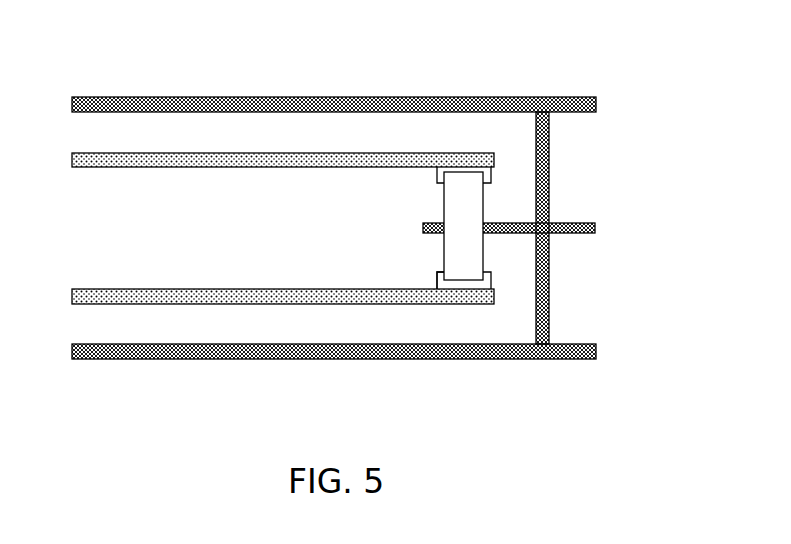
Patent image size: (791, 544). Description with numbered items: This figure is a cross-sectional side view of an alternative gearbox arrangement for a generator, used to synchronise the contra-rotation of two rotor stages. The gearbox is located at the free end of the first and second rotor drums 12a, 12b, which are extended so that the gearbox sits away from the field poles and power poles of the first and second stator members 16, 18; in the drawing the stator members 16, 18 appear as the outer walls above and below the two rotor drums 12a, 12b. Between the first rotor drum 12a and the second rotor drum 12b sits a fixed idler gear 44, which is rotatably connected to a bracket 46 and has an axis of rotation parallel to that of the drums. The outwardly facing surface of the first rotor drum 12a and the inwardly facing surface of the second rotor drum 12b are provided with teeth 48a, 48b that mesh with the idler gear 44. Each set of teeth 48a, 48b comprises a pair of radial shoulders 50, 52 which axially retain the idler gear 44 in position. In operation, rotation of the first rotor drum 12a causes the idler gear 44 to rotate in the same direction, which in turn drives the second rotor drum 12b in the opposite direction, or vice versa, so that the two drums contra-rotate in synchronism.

The second stator member 18 is at (318, 97).
The first stator member 16 is at (245, 359).
The bracket 46 is at (525, 221).
The radial shoulder 52 is at (493, 282).
The second rotor drum 12b is at (165, 168).
The first rotor drum 12a is at (205, 289).
The idler gear 44 is at (463, 199).
The teeth 48b is at (463, 167).
The teeth 48a is at (457, 289).
The radial shoulder 50 is at (437, 283).